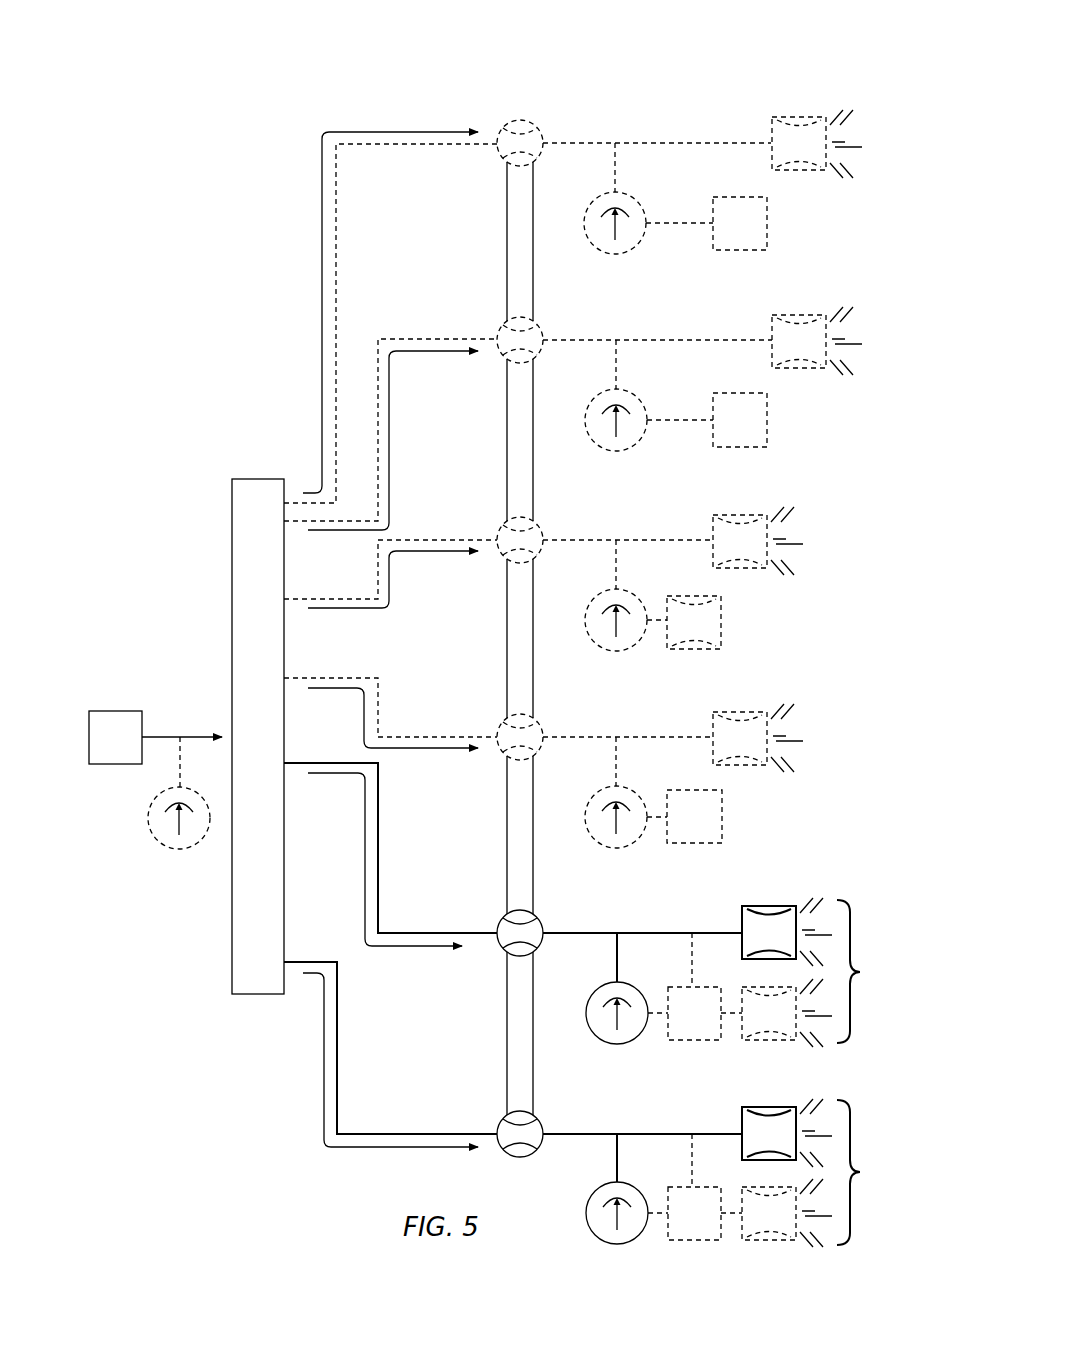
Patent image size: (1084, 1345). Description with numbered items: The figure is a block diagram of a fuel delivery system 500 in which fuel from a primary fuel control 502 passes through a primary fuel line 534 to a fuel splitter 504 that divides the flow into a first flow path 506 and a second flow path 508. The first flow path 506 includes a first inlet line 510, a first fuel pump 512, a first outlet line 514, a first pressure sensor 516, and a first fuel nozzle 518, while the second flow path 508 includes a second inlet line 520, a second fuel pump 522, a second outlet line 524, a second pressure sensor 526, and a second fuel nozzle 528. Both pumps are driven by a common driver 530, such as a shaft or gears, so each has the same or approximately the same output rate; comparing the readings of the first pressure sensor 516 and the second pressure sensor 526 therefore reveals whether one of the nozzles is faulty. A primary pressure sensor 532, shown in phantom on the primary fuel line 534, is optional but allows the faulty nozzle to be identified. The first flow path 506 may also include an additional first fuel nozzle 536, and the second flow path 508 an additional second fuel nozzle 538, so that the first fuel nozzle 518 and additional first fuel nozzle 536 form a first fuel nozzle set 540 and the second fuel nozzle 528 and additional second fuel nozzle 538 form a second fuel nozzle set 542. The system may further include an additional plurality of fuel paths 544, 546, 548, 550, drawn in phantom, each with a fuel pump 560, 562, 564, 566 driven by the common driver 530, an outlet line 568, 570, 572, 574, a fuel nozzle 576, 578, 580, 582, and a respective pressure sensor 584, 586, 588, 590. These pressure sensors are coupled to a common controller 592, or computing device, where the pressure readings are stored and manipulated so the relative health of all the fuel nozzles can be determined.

The fuel delivery system 500 is at (280, 62).
The primary fuel control 502 is at (115, 737).
The fuel splitter 504 is at (258, 736).
The first flow path 506 is at (322, 1051).
The second flow path 508 is at (400, 948).
The first inlet line 510 is at (395, 1132).
The first fuel pump 512 is at (520, 1134).
The first outlet line 514 is at (571, 1132).
The first pressure sensor 516 is at (637, 1240).
The first fuel nozzle 518 is at (787, 1133).
The second inlet line 520 is at (440, 930).
The second fuel pump 522 is at (520, 933).
The second outlet line 524 is at (571, 931).
The second pressure sensor 526 is at (637, 1040).
The second fuel nozzle 528 is at (787, 932).
The common driver 530 is at (506, 1012).
The primary pressure sensor 532 is at (158, 838).
The primary fuel line 534 is at (163, 735).
The additional first fuel nozzle 536 is at (776, 1213).
The additional second fuel nozzle 538 is at (776, 1013).
The first fuel nozzle set 540 is at (871, 1172).
The second fuel nozzle set 542 is at (871, 971).
The additional fuel path 544 is at (436, 750).
The additional fuel path 546 is at (439, 553).
The additional fuel path 548 is at (449, 358).
The additional fuel path 550 is at (321, 188).
The fuel pump 560 is at (520, 737).
The fuel pump 562 is at (520, 540).
The fuel pump 564 is at (520, 340).
The fuel pump 566 is at (520, 143).
The outlet line 568 is at (583, 735).
The outlet line 570 is at (569, 538).
The outlet line 572 is at (569, 339).
The outlet line 574 is at (582, 142).
The fuel nozzle 576 is at (758, 738).
The fuel nozzle 578 is at (758, 541).
The fuel nozzle 580 is at (817, 341).
The fuel nozzle 582 is at (817, 144).
The pressure sensor 584 is at (637, 840).
The pressure sensor 586 is at (637, 598).
The pressure sensor 588 is at (638, 447).
The pressure sensor 590 is at (636, 250).
The common controller 592 is at (706, 718).